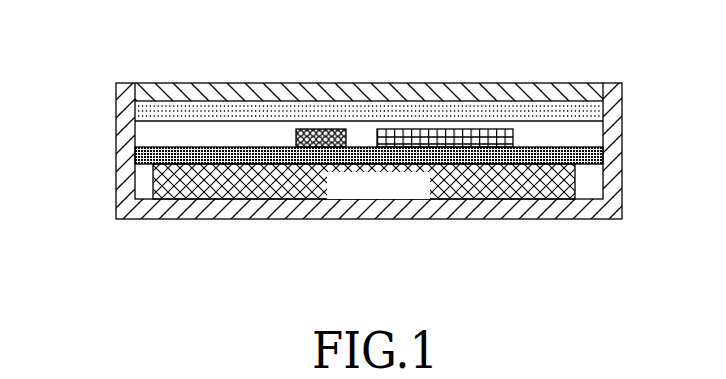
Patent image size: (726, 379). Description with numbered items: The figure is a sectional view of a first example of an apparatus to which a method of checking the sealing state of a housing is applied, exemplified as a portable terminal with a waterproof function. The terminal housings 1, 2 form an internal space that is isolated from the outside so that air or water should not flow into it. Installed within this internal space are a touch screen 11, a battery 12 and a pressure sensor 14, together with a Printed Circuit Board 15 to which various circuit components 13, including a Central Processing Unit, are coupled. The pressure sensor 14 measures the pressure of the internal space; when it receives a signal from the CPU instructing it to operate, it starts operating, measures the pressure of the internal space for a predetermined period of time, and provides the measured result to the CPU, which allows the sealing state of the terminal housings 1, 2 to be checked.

The terminal housing 1 is at (116, 148).
The terminal housing 2 is at (364, 86).
The touch screen 11 is at (598, 112).
The battery 12 is at (575, 182).
The circuit components 13 is at (443, 147).
The pressure sensor 14 is at (315, 146).
The Printed Circuit Board 15 is at (598, 155).